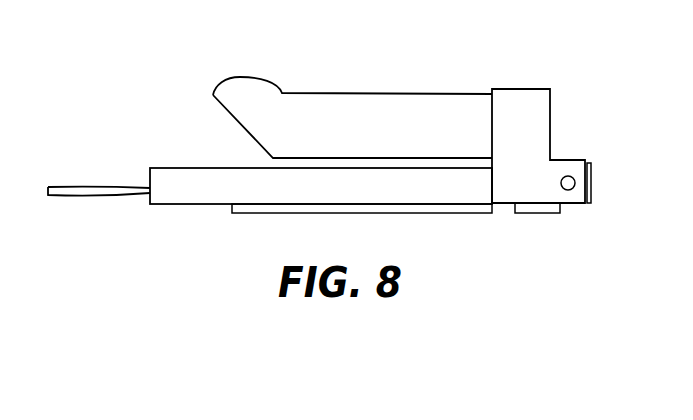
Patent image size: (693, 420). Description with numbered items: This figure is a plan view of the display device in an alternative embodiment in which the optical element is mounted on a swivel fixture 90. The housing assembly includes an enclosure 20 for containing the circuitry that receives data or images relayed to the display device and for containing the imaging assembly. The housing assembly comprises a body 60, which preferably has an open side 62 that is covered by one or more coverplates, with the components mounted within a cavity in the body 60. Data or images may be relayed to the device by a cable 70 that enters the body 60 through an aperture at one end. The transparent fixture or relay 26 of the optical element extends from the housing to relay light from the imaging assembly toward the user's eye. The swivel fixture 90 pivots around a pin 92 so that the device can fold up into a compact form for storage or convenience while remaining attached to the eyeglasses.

The enclosure 20 is at (173, 177).
The body 60 is at (233, 175).
The relay 26 is at (380, 100).
The swivel fixture 90 is at (535, 112).
The pin 92 is at (568, 183).
The open side 62 is at (272, 215).
The cable 70 is at (92, 183).